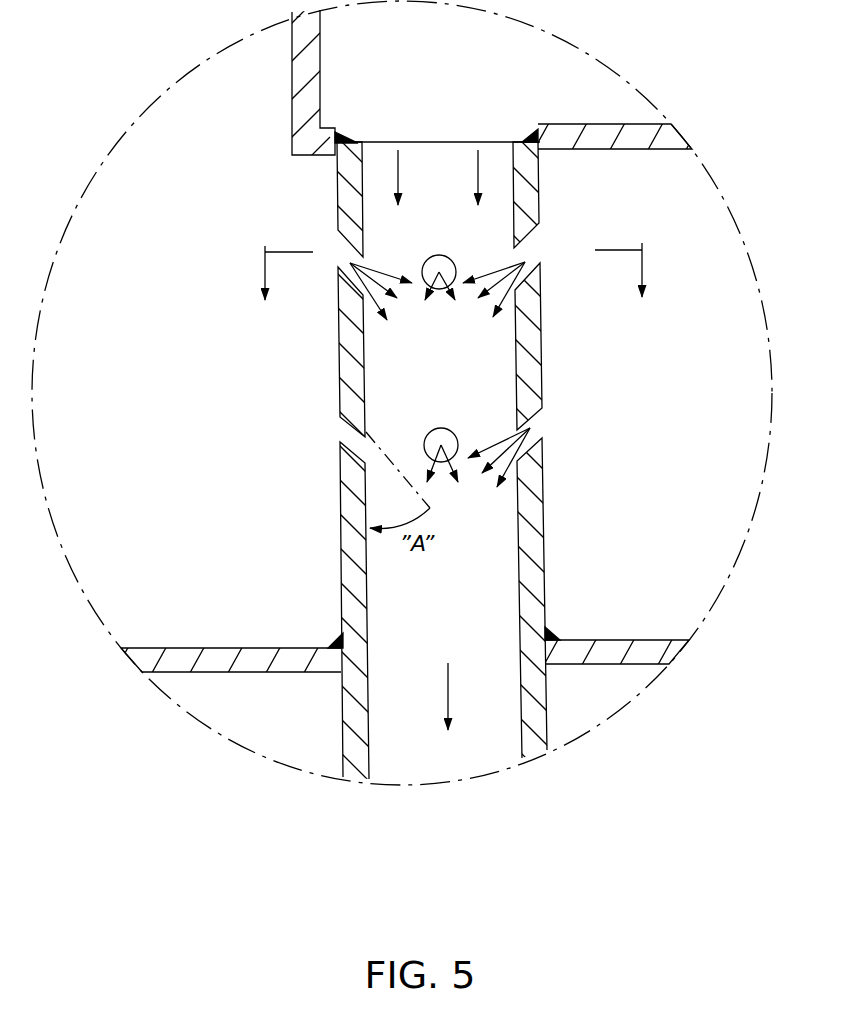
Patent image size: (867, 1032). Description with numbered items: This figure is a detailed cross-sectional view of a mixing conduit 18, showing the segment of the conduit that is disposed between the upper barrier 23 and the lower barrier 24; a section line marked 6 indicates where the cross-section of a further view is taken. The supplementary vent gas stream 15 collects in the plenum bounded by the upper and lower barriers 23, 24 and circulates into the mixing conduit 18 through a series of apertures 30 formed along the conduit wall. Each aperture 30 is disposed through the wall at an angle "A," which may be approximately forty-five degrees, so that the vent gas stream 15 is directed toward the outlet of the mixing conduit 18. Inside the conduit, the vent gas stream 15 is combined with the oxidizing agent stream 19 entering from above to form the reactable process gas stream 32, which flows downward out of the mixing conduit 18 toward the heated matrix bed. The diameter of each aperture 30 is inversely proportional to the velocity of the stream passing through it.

The supplementary vent gas stream 15 is at (350, 263).
The mixing conduit 18 is at (345, 210).
The oxidizing agent stream 19 is at (438, 195).
The upper barrier 23 is at (320, 156).
The lower barrier 24 is at (236, 658).
The apertures 30 is at (347, 282).
The reactable process gas stream 32 is at (448, 712).
The section line for FIG. 6 is at (454, 271).